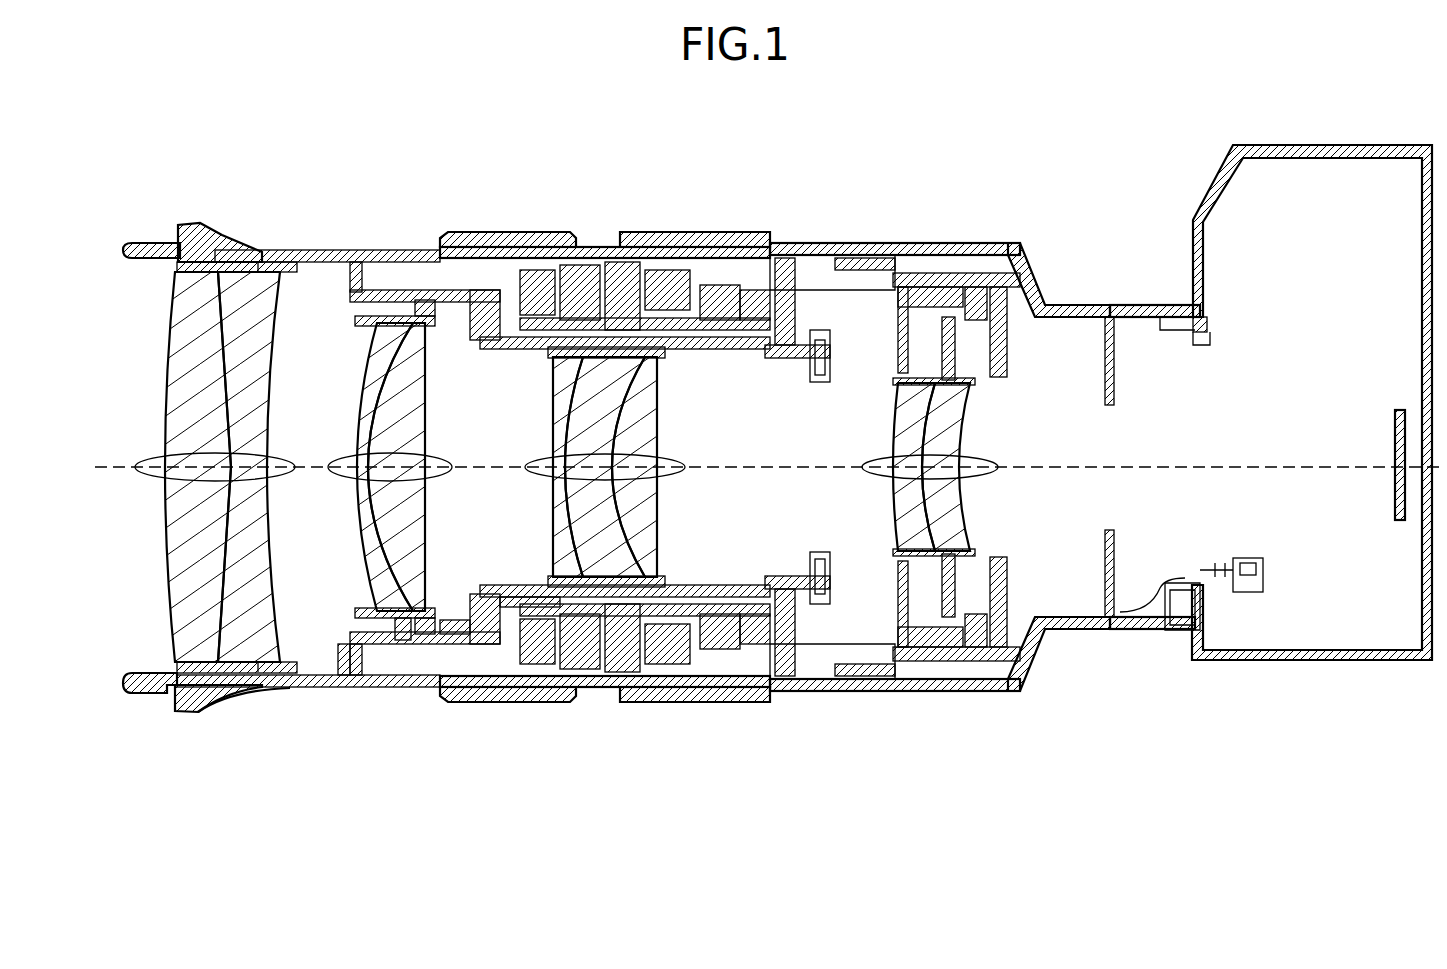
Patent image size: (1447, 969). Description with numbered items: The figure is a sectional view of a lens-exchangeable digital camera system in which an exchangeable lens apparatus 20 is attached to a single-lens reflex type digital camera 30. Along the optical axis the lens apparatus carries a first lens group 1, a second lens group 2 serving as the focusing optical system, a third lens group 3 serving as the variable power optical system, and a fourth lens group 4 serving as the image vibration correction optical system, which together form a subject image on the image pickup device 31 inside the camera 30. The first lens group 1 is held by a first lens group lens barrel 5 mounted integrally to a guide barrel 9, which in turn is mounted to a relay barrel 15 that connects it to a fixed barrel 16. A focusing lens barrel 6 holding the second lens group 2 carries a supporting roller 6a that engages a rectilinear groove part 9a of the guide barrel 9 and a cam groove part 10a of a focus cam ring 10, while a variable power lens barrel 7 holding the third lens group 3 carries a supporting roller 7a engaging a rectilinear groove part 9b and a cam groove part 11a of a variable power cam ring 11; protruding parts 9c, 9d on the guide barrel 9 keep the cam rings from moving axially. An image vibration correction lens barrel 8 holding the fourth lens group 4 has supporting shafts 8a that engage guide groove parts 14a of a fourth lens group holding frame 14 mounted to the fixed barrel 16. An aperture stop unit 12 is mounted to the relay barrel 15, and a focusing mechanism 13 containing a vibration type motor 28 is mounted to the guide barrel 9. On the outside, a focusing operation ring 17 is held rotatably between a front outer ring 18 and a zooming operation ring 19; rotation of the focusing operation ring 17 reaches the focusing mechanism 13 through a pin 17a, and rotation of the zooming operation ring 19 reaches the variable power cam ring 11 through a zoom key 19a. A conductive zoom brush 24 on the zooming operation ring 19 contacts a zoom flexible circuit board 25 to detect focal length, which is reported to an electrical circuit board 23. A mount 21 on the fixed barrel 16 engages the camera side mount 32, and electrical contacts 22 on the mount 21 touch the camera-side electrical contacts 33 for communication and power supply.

The first lens group 1 is at (150, 478).
The second lens group 2 is at (345, 480).
The third lens group 3 is at (545, 478).
The fourth lens group 4 is at (875, 478).
The first lens group lens barrel 5 is at (241, 690).
The focusing lens barrel 6 is at (388, 680).
The supporting roller 6a is at (400, 690).
The variable power lens barrel 7 is at (613, 650).
The supporting roller 7a is at (665, 665).
The image vibration correction lens barrel 8 is at (1038, 657).
The supporting shafts 8a is at (972, 637).
The guide barrel 9 is at (832, 675).
The rectilinear groove part 9a is at (402, 292).
The rectilinear groove part 9b is at (710, 680).
The protruding part 9c is at (353, 688).
The protruding part 9d is at (581, 645).
The focus cam ring 10 is at (467, 663).
The cam groove parts 10a is at (423, 687).
The variable power cam ring 11 is at (733, 672).
The cam groove parts 11a is at (642, 650).
The aperture stop unit 12 is at (868, 690).
The focusing mechanism 13 is at (522, 700).
The fourth lens group holding frame 14 is at (937, 633).
The guide groove parts 14a is at (977, 650).
The relay barrel 15 is at (872, 265).
The fixed barrel 16 is at (930, 267).
The focusing operation ring 17 is at (483, 693).
The pin 17a is at (548, 707).
The front outer ring 18 is at (193, 708).
The zooming operation ring 19 is at (657, 228).
The zoom key 19a is at (781, 688).
The rear outer ring 20 is at (1017, 247).
The mount 21 is at (1165, 322).
The electrical contacts 22 is at (1173, 627).
The electrical circuit board 23 is at (1118, 633).
The conductive zoom brush 24 is at (770, 258).
The zoom flexible circuit board 25 is at (793, 267).
The vibration type motor 28 is at (705, 285).
The single-lens reflex type digital camera 30 is at (1343, 175).
The image pickup device 31 is at (1393, 497).
The camera side mount 32 is at (1193, 317).
The electrical contacts 33 is at (1258, 600).